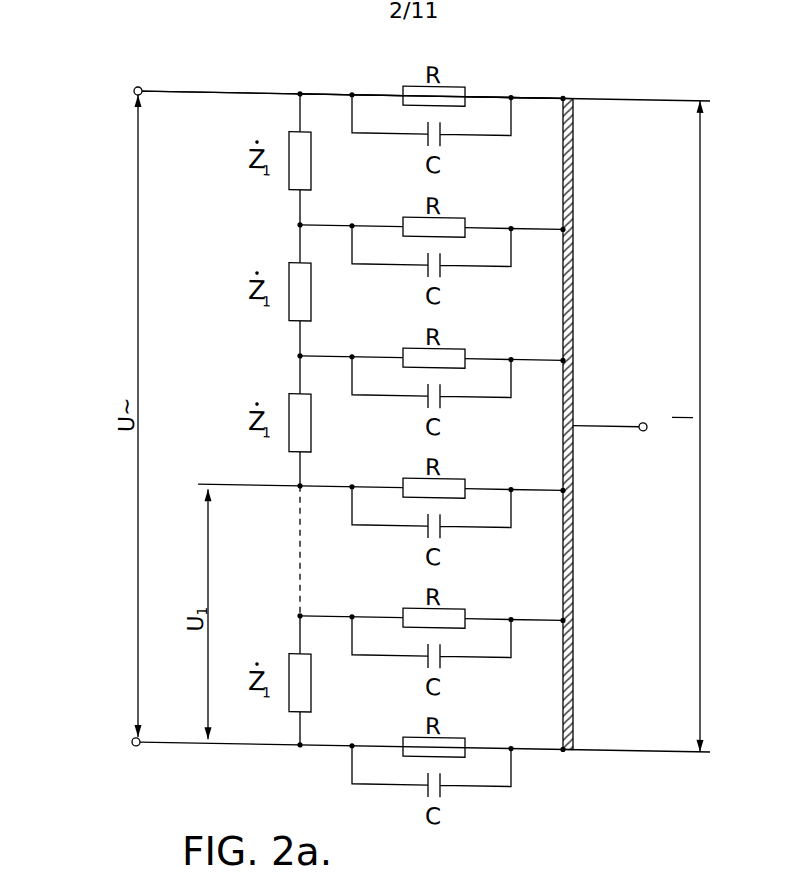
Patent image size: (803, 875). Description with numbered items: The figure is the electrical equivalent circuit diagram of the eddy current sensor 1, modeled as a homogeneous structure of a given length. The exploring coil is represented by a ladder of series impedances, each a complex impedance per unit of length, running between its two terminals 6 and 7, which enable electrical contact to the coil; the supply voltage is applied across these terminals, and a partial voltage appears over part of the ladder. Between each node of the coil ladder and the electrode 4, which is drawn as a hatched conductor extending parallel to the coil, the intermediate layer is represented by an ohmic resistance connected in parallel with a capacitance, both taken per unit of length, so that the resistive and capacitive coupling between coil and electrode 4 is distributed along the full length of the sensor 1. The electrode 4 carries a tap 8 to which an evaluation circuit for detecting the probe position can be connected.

The eddy current sensor 1 is at (545, 71).
The electrode 4 is at (575, 190).
The terminal 6 is at (126, 752).
The terminal 7 is at (140, 72).
The tap 8 is at (612, 412).